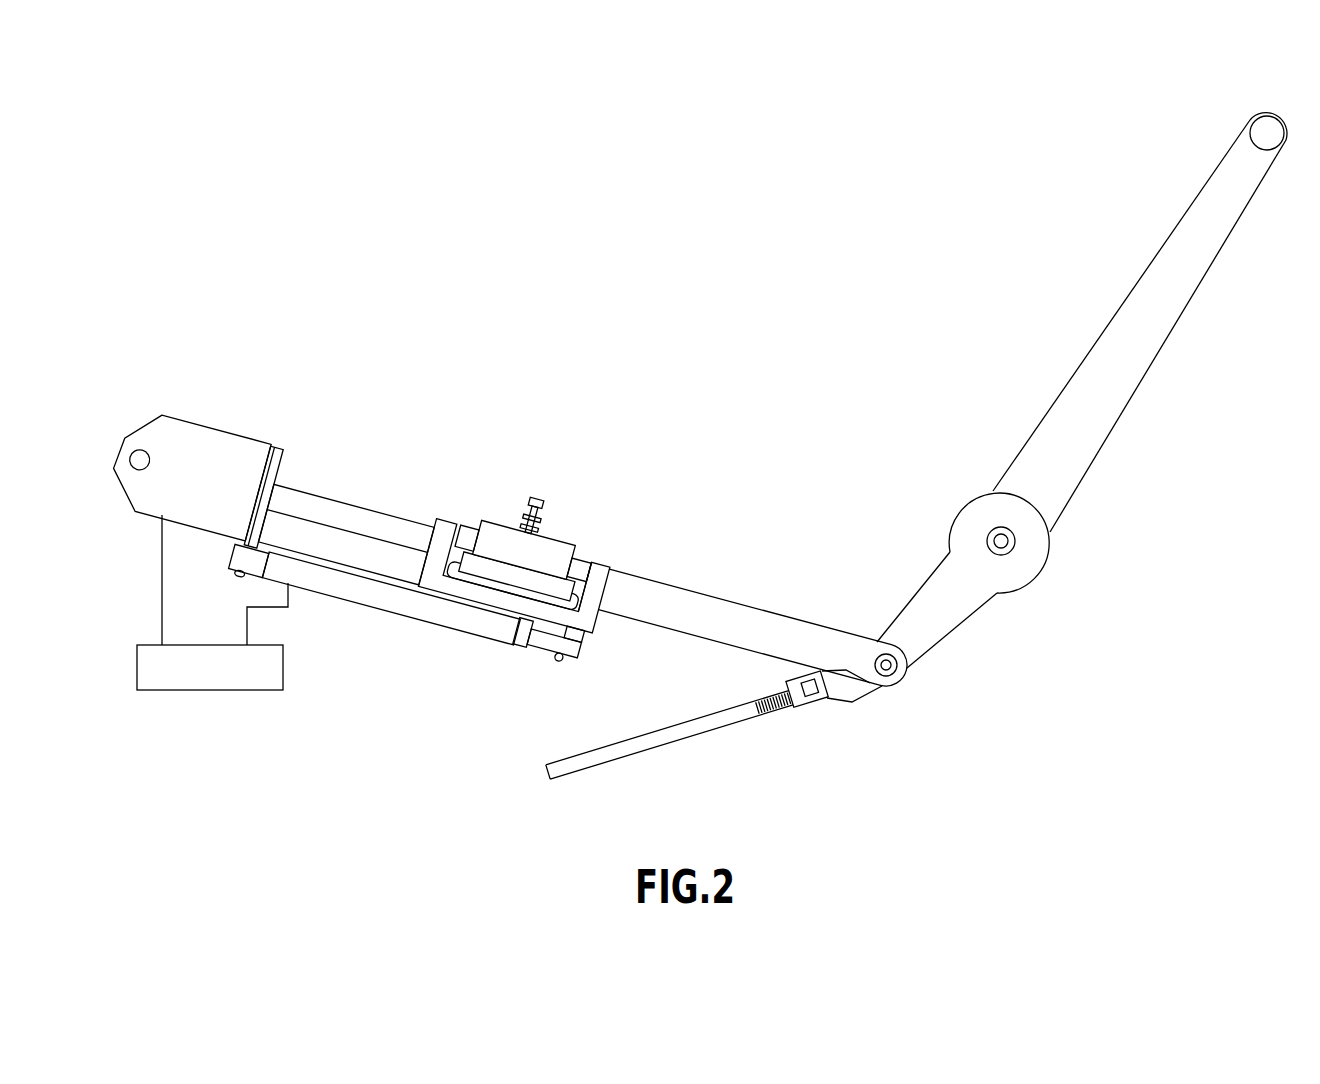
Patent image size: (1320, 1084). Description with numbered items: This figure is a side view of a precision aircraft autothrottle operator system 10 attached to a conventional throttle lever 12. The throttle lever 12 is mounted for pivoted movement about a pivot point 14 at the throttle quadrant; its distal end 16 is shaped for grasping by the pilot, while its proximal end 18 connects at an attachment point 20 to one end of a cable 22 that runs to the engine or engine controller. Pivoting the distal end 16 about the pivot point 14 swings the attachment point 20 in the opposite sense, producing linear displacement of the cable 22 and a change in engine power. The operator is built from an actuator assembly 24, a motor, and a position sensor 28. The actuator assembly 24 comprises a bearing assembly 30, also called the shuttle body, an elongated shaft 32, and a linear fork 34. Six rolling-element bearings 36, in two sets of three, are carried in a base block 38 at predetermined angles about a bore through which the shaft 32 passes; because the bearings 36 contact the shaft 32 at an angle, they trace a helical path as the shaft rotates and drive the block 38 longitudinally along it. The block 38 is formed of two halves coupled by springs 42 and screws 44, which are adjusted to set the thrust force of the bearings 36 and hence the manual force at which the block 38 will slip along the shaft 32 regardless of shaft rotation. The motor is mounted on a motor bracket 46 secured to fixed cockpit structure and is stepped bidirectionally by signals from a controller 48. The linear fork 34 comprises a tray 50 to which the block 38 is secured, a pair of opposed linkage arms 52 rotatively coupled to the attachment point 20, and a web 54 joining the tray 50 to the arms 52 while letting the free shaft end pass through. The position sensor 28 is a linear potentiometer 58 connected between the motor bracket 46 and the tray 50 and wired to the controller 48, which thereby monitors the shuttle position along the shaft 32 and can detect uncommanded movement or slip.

The autothrottle operator system 10 is at (714, 348).
The throttle lever 12 is at (1140, 311).
The pivot point 14 is at (1015, 541).
The distal end 16 is at (1259, 130).
The proximal end 18 is at (953, 618).
The attachment point 20 is at (896, 680).
The cable 22 is at (722, 727).
The actuator assembly 24 is at (621, 659).
The position sensor 28 is at (343, 553).
The bearing assembly 30 is at (552, 565).
The elongated shaft 32 is at (360, 515).
The linear fork 34 is at (807, 605).
The rolling-element bearings 36 is at (470, 523).
The base block 38 is at (521, 529).
The springs 42 is at (545, 521).
The screws 44 is at (538, 499).
The motor bracket 46 is at (275, 440).
The controller 48 is at (212, 692).
The tray 50 is at (533, 617).
The linkage arms 52 is at (755, 623).
The web 54 is at (612, 582).
The linear potentiometer 58 is at (315, 582).